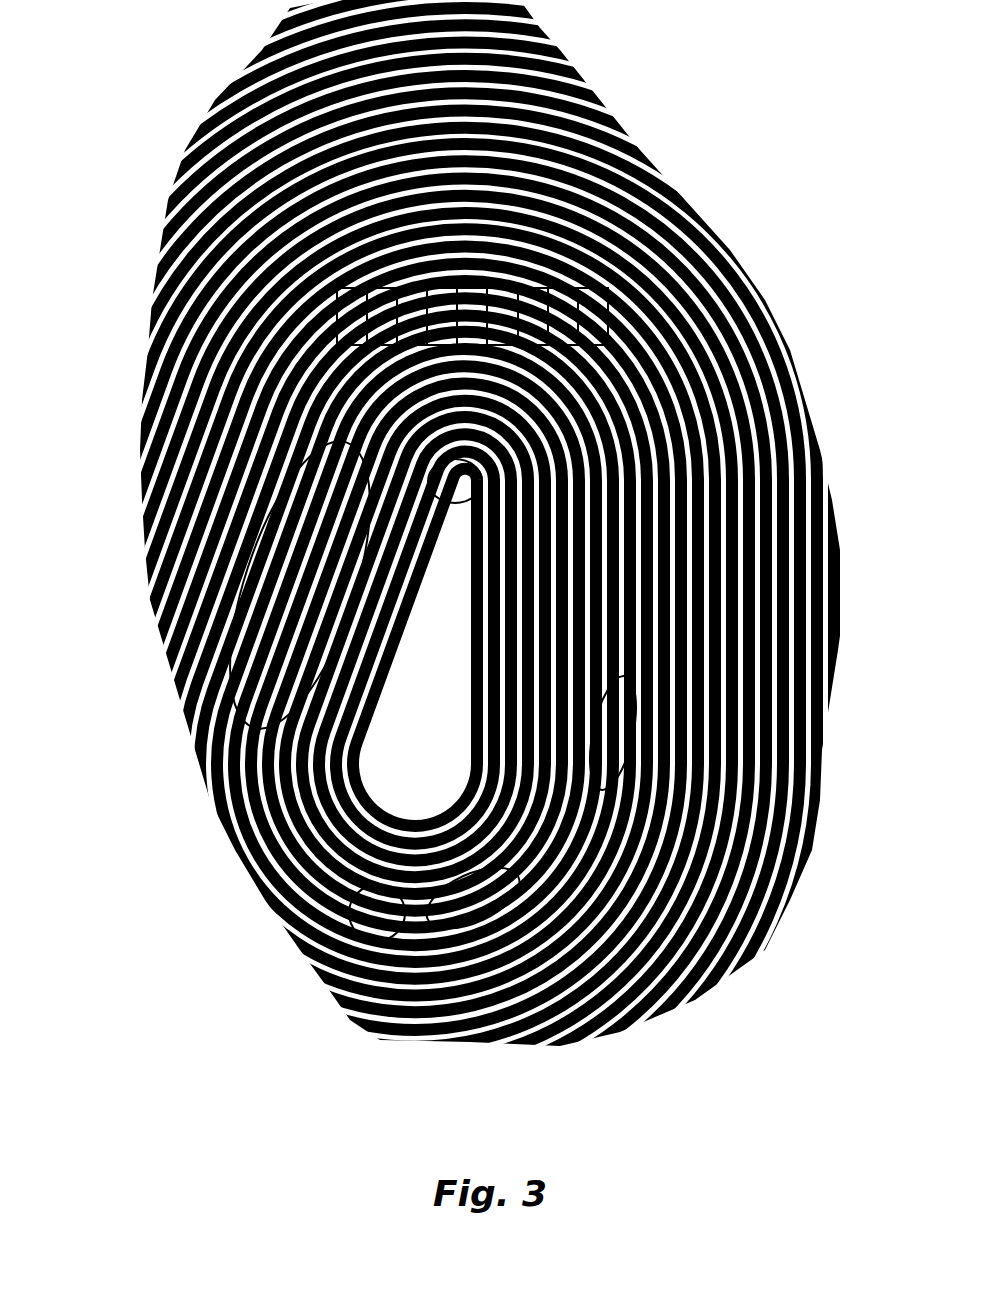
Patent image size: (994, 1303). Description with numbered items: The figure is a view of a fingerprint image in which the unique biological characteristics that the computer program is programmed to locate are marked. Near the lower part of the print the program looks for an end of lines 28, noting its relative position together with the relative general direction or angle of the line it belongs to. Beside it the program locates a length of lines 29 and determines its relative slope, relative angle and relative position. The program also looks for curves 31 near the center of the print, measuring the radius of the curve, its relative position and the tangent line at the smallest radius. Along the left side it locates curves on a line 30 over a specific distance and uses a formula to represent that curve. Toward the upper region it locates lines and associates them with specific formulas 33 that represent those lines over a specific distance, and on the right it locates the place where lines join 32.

The end of lines 28 is at (352, 930).
The length of lines 29 is at (444, 930).
The curves on a line 30 is at (298, 583).
The curves 31 is at (478, 460).
The lines where they join 32 is at (627, 690).
The formulas 33 is at (612, 330).